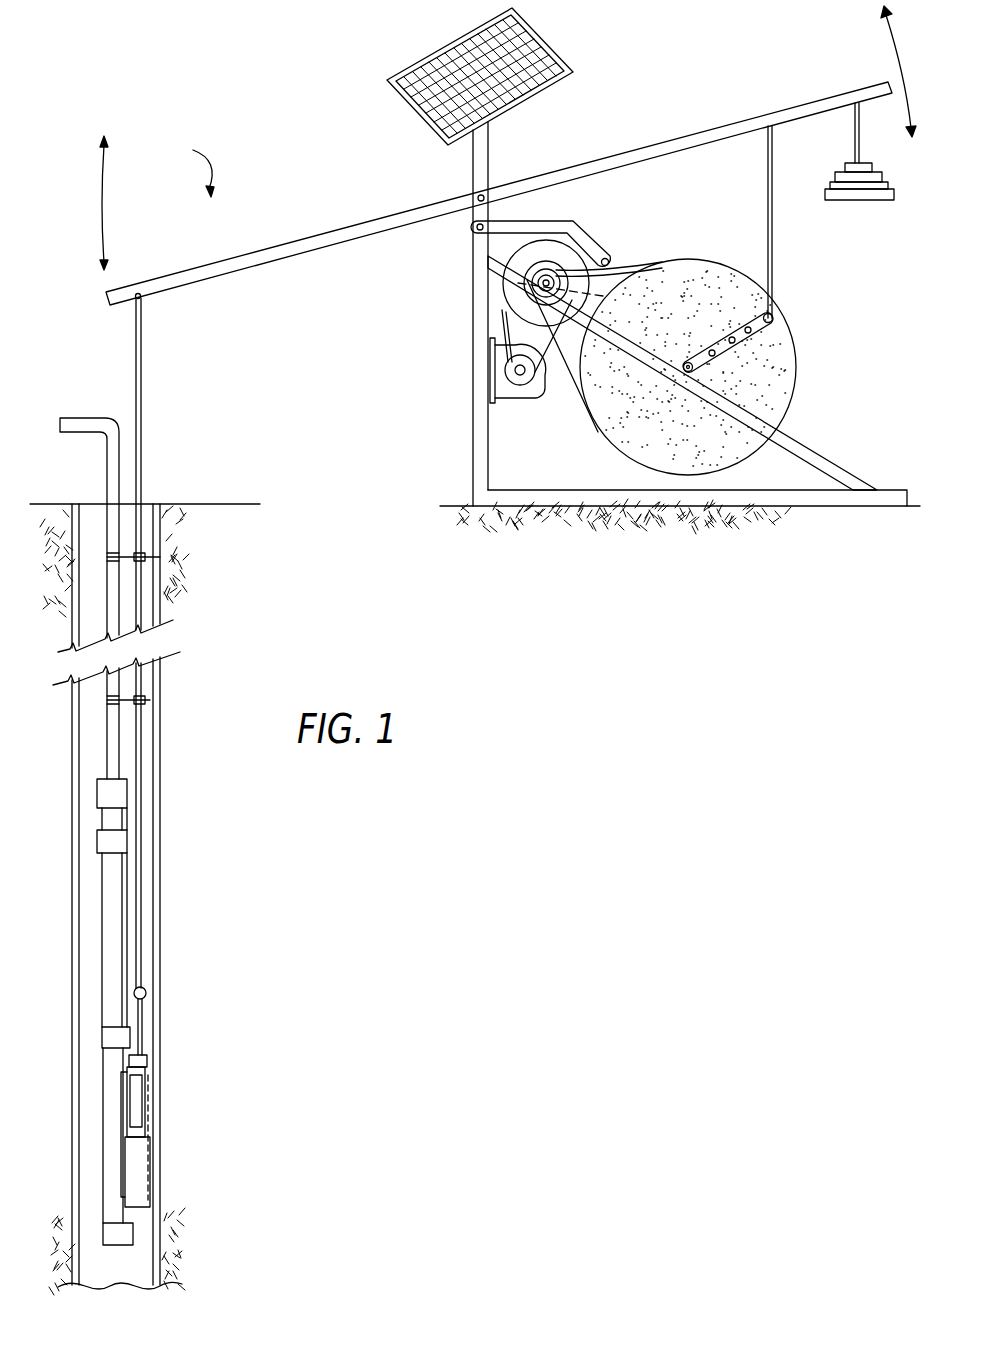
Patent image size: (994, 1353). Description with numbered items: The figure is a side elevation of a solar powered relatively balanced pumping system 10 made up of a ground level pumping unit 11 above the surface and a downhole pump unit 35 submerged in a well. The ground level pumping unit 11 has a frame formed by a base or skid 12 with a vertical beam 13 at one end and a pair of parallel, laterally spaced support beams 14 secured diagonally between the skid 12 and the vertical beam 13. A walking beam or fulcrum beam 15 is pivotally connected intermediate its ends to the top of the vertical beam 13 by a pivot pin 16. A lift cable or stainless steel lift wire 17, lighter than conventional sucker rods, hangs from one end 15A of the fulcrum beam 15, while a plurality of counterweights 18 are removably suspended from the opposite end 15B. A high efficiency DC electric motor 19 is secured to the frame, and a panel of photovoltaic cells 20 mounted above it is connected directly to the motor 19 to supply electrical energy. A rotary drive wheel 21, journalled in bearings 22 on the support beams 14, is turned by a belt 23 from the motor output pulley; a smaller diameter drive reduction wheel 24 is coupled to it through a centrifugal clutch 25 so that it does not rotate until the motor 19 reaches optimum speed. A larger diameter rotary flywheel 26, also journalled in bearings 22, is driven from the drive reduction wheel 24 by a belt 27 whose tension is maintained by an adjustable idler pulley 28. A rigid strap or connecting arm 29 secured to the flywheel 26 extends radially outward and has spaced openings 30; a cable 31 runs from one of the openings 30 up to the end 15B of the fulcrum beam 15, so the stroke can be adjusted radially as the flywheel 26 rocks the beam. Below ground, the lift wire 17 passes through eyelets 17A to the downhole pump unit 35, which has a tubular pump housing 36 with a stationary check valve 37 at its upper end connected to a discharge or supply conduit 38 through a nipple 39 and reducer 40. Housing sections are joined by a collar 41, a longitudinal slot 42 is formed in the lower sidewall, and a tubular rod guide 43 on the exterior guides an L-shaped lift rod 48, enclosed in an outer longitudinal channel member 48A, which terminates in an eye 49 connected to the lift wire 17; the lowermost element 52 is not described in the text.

The solar powered relatively balanced pumping system 10 is at (190, 165).
The ground level pumping unit 11 is at (364, 206).
The base or skid 12 is at (567, 488).
The vertical beam 13 is at (473, 440).
The support beams 14 is at (828, 452).
The walking beam or fulcrum beam 15 is at (276, 262).
The end of fulcrum beam 15A is at (198, 244).
The opposite end of fulcrum beam 15B is at (803, 100).
The pivot pin 16 is at (488, 193).
The lift cable or stainless steel lift wire 17 is at (143, 390).
The eyelets 17A is at (150, 557).
The counterweights 18 is at (861, 195).
The DC electric motor 19 is at (527, 400).
The panel of photovoltaic cells 20 is at (432, 53).
The rotary drive wheel 21 is at (600, 250).
The bearings 22 is at (500, 259).
The belt 23 is at (500, 322).
The drive reduction wheel 24 is at (478, 240).
The centrifugal clutch 25 is at (592, 297).
The rotary flywheel 26 is at (793, 365).
The belt 27 is at (628, 262).
The idler pulley 28 is at (612, 256).
The rigid strap or connecting arm 29 is at (732, 358).
The spaced openings 30 is at (745, 330).
The cable 31 is at (773, 250).
The downhole pump unit 35 is at (220, 920).
The tubular pump housing 36 is at (134, 895).
The stationary check valve 37 is at (127, 840).
The discharge or supply conduit 38 is at (120, 607).
The nipple 39 is at (123, 817).
The reducer 40 is at (127, 790).
The collar 41 is at (105, 1037).
The longitudinal slot 42 is at (131, 1118).
The tubular rod guide 43 is at (148, 1060).
The lift rod 48 is at (145, 1027).
The outer longitudinal channel member 48A is at (152, 1173).
The eye 49 is at (147, 992).
The foot valve 52 is at (131, 1235).